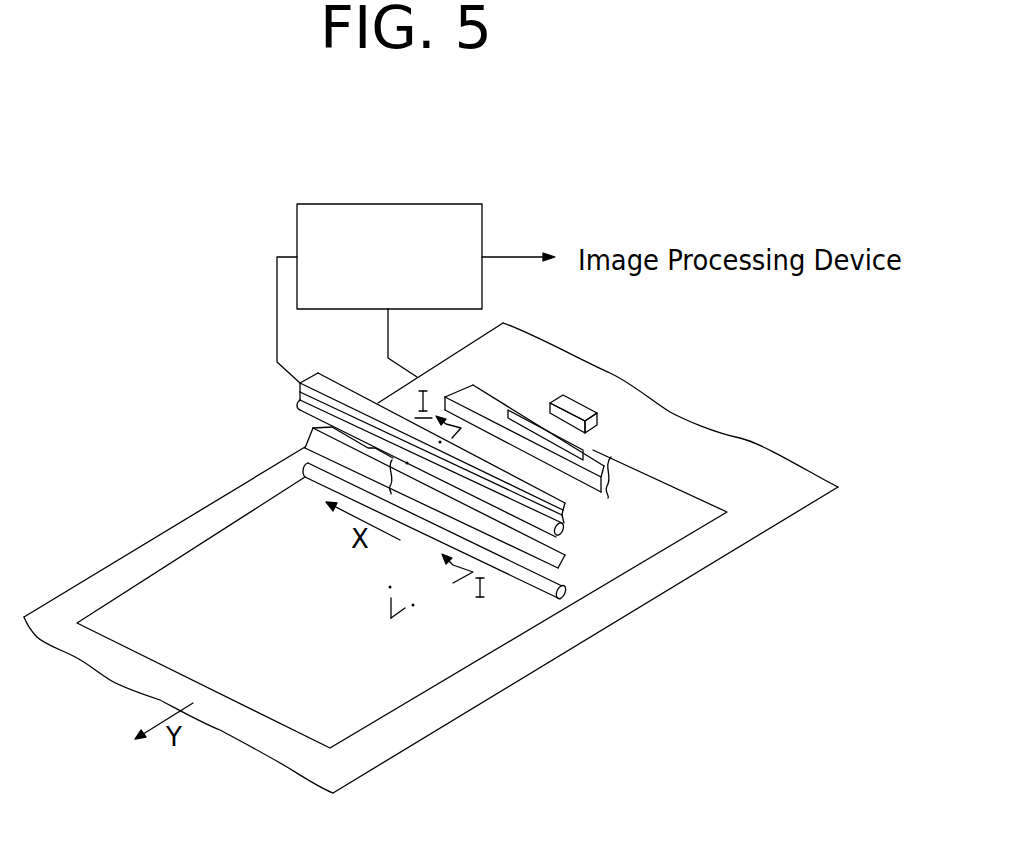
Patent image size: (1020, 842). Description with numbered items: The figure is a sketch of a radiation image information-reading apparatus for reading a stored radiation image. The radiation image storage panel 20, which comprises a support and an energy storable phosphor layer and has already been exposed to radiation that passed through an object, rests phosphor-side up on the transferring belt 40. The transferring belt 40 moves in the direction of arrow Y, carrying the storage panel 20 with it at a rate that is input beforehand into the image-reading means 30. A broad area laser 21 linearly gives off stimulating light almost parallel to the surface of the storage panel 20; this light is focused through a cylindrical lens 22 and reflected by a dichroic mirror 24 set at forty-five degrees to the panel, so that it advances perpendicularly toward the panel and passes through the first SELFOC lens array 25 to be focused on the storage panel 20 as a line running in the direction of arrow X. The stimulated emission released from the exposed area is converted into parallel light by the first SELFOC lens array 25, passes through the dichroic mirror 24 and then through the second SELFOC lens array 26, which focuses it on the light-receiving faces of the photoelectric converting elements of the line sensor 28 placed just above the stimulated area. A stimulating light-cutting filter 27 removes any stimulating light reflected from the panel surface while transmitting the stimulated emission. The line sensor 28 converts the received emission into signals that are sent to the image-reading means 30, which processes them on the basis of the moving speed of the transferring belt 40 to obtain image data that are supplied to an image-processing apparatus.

The radiation image storage panel 20 is at (385, 702).
The broad area laser 21 is at (572, 403).
The cylindrical lens 22 is at (613, 472).
The dichroic mirror 24 is at (309, 438).
The first SELFOC lens array 25 is at (300, 467).
The second SELFOC lens array 26 is at (562, 532).
The stimulating light-cutting filter 27 is at (567, 513).
The line sensor 28 is at (352, 388).
The image-reading means 30 is at (395, 204).
The transferring belt 40 is at (635, 400).